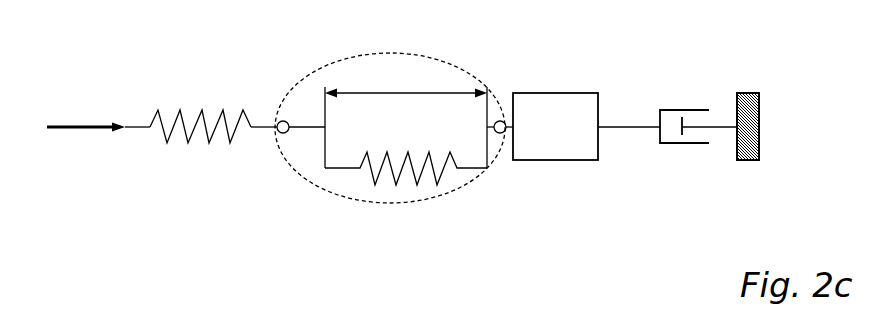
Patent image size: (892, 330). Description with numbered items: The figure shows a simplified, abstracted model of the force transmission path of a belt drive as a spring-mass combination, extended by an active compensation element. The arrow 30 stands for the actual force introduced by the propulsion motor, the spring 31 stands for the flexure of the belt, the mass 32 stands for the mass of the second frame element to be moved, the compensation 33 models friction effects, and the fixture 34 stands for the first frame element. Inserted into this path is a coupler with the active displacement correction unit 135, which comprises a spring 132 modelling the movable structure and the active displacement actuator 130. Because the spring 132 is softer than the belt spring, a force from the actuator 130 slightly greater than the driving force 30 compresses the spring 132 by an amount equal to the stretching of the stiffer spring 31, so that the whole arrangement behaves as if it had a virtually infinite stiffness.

The arrow 30 is at (71, 198).
The spring 31 is at (183, 191).
The active displacement actuator 130 is at (391, 57).
The spring 132 is at (387, 209).
The active displacement correction unit 135 is at (410, 109).
The mass 32 is at (515, 183).
The compensation 33 is at (623, 191).
The fixture 34 is at (743, 183).